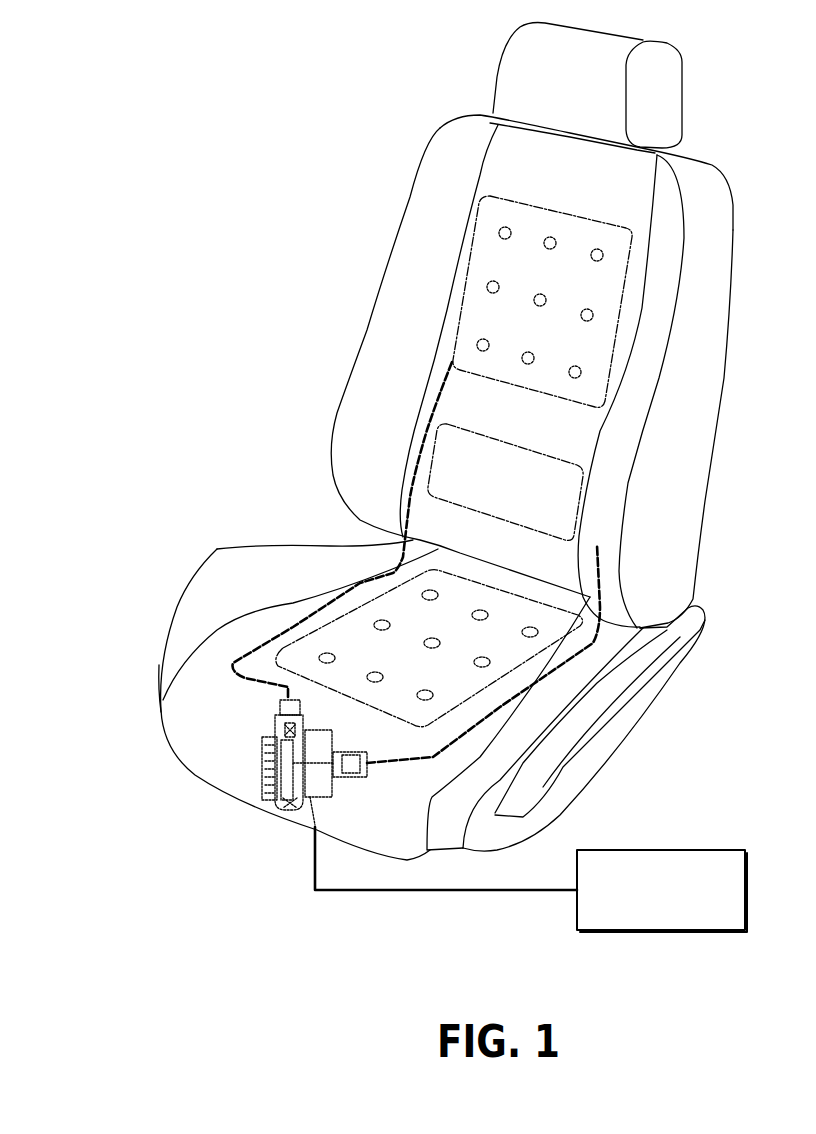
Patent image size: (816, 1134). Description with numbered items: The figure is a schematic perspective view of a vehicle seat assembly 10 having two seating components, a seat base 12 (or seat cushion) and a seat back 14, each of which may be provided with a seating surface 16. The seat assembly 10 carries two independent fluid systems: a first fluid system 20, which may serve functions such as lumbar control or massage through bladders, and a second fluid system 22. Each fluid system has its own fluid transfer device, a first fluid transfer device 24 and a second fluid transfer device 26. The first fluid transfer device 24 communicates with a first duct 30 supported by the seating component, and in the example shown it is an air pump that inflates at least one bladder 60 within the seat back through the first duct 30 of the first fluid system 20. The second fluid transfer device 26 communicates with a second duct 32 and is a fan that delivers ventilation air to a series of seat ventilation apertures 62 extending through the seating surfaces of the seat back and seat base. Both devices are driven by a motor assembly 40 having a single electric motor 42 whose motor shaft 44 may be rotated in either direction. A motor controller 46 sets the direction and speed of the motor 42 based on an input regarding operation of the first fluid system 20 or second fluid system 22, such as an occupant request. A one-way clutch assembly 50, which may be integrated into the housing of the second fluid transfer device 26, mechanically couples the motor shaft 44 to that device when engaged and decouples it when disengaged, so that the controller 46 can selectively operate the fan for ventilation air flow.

The seat assembly 10 is at (268, 168).
The seat base 12 is at (190, 560).
The seat back 14 is at (440, 116).
The seating surface 16 is at (497, 175).
The first fluid system 20 is at (602, 522).
The second fluid system 22 is at (440, 350).
The first fluid transfer device 24 is at (380, 773).
The second fluid transfer device 26 is at (257, 810).
The first duct 30 is at (497, 702).
The second duct 32 is at (278, 636).
The motor assembly 40 is at (270, 840).
The electric motor 42 is at (327, 787).
The motor shaft 44 is at (273, 740).
The motor controller 46 is at (662, 891).
The one-way clutch assembly 50 is at (300, 803).
The bladder 60 is at (553, 460).
The seat ventilation apertures 62 is at (532, 302).